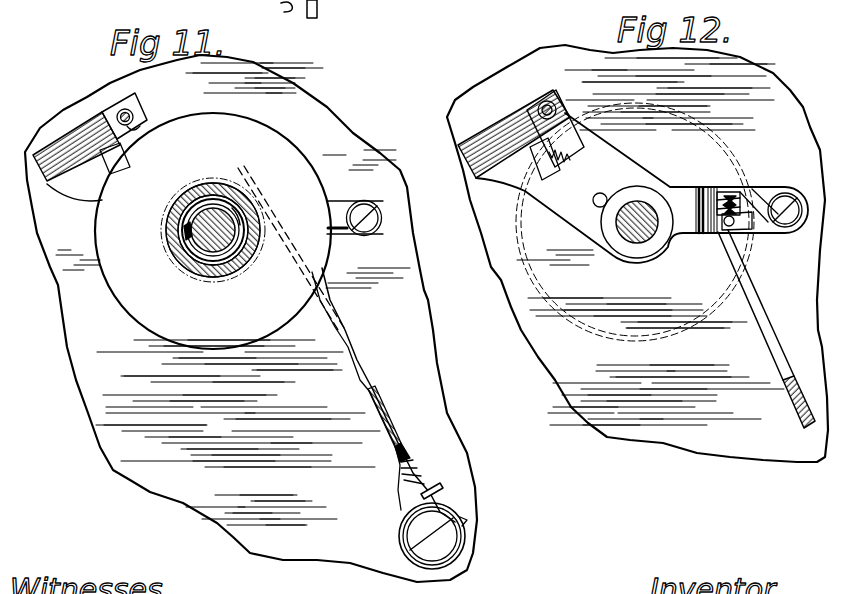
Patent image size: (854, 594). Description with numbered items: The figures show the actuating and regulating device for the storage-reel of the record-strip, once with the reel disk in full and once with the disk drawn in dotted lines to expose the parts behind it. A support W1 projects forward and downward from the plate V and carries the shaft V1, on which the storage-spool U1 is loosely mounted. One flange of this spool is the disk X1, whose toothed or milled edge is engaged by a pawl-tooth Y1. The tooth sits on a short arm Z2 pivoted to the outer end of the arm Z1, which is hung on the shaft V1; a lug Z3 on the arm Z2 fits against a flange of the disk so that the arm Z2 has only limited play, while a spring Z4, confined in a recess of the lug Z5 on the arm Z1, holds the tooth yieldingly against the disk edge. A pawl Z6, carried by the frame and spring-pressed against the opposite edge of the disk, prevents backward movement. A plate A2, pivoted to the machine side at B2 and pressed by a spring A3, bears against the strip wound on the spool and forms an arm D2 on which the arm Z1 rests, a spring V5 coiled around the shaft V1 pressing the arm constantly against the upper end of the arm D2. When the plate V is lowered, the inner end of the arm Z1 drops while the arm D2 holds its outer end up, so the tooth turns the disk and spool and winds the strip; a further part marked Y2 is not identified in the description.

In FIG. 11, the plate V is at (68, 142).
In FIG. 12, the plate V is at (515, 147).
In FIG. 11, the shaft V1 is at (188, 212).
In FIG. 11, the spring V5 is at (195, 245).
In FIG. 11, the storage-spool U1 is at (212, 252).
In FIG. 11, the support W1 is at (87, 170).
In FIG. 12, the support W1 is at (642, 188).
In FIG. 11, the disk X1 is at (213, 231).
In FIG. 11, the pawl-tooth Y1 is at (328, 226).
In FIG. 12, the pawl-tooth Y1 is at (760, 207).
In FIG. 12, the lever pivot Y2 is at (637, 240).
In FIG. 11, the arm Z1 is at (343, 237).
In FIG. 12, the arm Z1 is at (748, 191).
In FIG. 11, the short arm Z2 is at (379, 204).
In FIG. 12, the short arm Z2 is at (716, 232).
In FIG. 12, the lug Z3 is at (742, 226).
In FIG. 12, the spring Z4 is at (718, 197).
In FIG. 12, the lug Z5 is at (729, 193).
In FIG. 11, the pawl Z6 is at (137, 114).
In FIG. 12, the pawl Z6 is at (563, 113).
In FIG. 11, the arm D2 is at (340, 313).
In FIG. 12, the arm D2 is at (756, 293).
In FIG. 11, the plate A2 is at (382, 418).
In FIG. 12, the plate A2 is at (799, 404).
In FIG. 11, the spring A3 is at (445, 490).
In FIG. 11, the pivot B2 is at (421, 532).